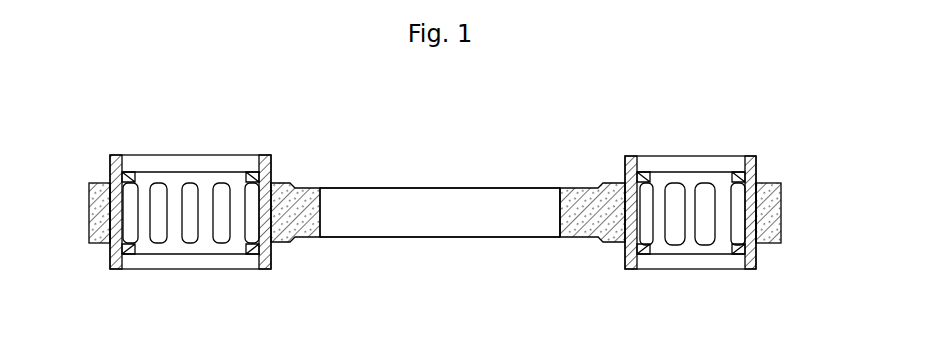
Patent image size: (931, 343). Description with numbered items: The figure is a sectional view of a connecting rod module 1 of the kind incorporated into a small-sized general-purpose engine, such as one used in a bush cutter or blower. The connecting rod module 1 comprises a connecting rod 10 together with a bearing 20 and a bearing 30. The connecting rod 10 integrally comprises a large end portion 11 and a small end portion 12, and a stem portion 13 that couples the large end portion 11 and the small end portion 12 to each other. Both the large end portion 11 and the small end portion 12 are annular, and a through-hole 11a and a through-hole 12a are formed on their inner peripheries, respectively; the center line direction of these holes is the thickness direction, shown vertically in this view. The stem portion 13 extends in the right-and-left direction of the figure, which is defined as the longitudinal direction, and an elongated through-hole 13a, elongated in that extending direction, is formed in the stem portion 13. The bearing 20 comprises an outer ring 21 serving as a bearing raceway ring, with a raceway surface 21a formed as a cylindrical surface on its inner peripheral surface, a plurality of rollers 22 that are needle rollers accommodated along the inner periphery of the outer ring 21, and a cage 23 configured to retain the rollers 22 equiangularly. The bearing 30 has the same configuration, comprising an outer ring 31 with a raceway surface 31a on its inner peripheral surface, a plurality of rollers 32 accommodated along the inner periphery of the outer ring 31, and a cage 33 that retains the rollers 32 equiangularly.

The connecting rod module 1 is at (481, 147).
The connecting rod 10 is at (575, 167).
The large end portion 11 is at (96, 182).
The through-hole 11a is at (113, 222).
The small end portion 12 is at (773, 182).
The through-hole 12a is at (757, 225).
The stem portion 13 is at (578, 228).
The elongated through-hole 13a is at (558, 226).
The bearing 20 is at (214, 152).
The outer ring 21 is at (264, 155).
The raceway surface 21a is at (124, 191).
The rollers 22 is at (187, 233).
The cage 23 is at (177, 180).
The bearing 30 is at (729, 150).
The outer ring 31 is at (630, 156).
The raceway surface 31a is at (640, 203).
The rollers 32 is at (735, 232).
The cage 33 is at (692, 180).